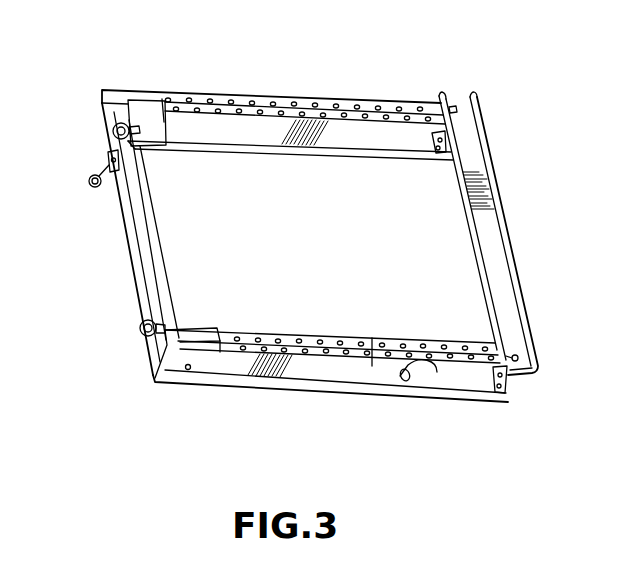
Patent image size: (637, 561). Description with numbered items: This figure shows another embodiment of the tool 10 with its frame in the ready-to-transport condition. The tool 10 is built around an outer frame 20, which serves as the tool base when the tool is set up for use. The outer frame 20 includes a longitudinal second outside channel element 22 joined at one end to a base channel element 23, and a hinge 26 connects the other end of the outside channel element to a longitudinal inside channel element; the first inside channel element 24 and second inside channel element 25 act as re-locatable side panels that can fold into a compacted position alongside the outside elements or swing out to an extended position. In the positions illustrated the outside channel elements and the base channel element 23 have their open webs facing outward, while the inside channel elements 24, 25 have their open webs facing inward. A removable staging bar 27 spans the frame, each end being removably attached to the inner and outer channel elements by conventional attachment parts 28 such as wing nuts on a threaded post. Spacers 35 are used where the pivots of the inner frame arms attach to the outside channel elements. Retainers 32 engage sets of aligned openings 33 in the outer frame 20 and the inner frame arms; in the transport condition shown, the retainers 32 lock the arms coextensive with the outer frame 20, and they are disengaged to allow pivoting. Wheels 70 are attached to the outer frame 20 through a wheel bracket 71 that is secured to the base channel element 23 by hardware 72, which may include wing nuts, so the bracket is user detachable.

The tool 10 is at (490, 76).
The outer frame 20 is at (338, 373).
The second outside channel element 22 is at (195, 103).
The base channel element 23 is at (125, 243).
The first inside channel element 24 is at (370, 366).
The second inside channel element 25 is at (317, 118).
The hinge 26 is at (506, 380).
The staging bar 27 is at (488, 231).
The attachment parts 28 is at (520, 358).
The retainers 32 is at (410, 382).
The aligned openings 33 is at (188, 372).
The spacers 35 is at (143, 108).
The wheels 70 is at (145, 338).
The wheel bracket 71 is at (110, 150).
The hardware 72 is at (115, 163).